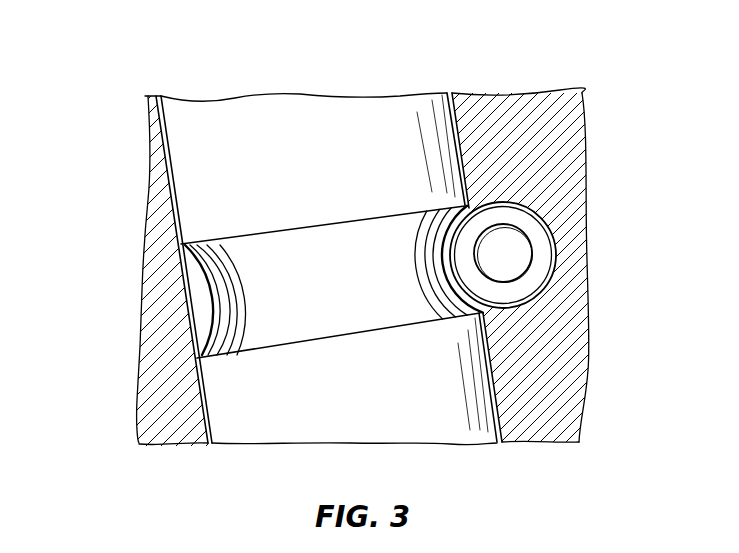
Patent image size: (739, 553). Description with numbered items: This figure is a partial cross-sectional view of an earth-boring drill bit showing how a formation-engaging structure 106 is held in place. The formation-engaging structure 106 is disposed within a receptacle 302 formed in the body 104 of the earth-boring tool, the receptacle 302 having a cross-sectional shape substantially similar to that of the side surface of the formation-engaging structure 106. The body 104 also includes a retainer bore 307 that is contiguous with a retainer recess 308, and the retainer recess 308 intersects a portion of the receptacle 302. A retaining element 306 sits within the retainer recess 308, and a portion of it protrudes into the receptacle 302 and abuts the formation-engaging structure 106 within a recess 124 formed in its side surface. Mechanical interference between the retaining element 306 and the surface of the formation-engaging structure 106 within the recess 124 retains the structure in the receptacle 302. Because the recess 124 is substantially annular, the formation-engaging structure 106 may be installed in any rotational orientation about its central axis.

The body 104 is at (558, 145).
The formation-engaging structure 106 is at (330, 127).
The recess 124 is at (491, 160).
The receptacle 302 is at (165, 184).
The retaining element 306 is at (507, 268).
The retainer bore 307 is at (548, 258).
The retainer recess 308 is at (553, 214).